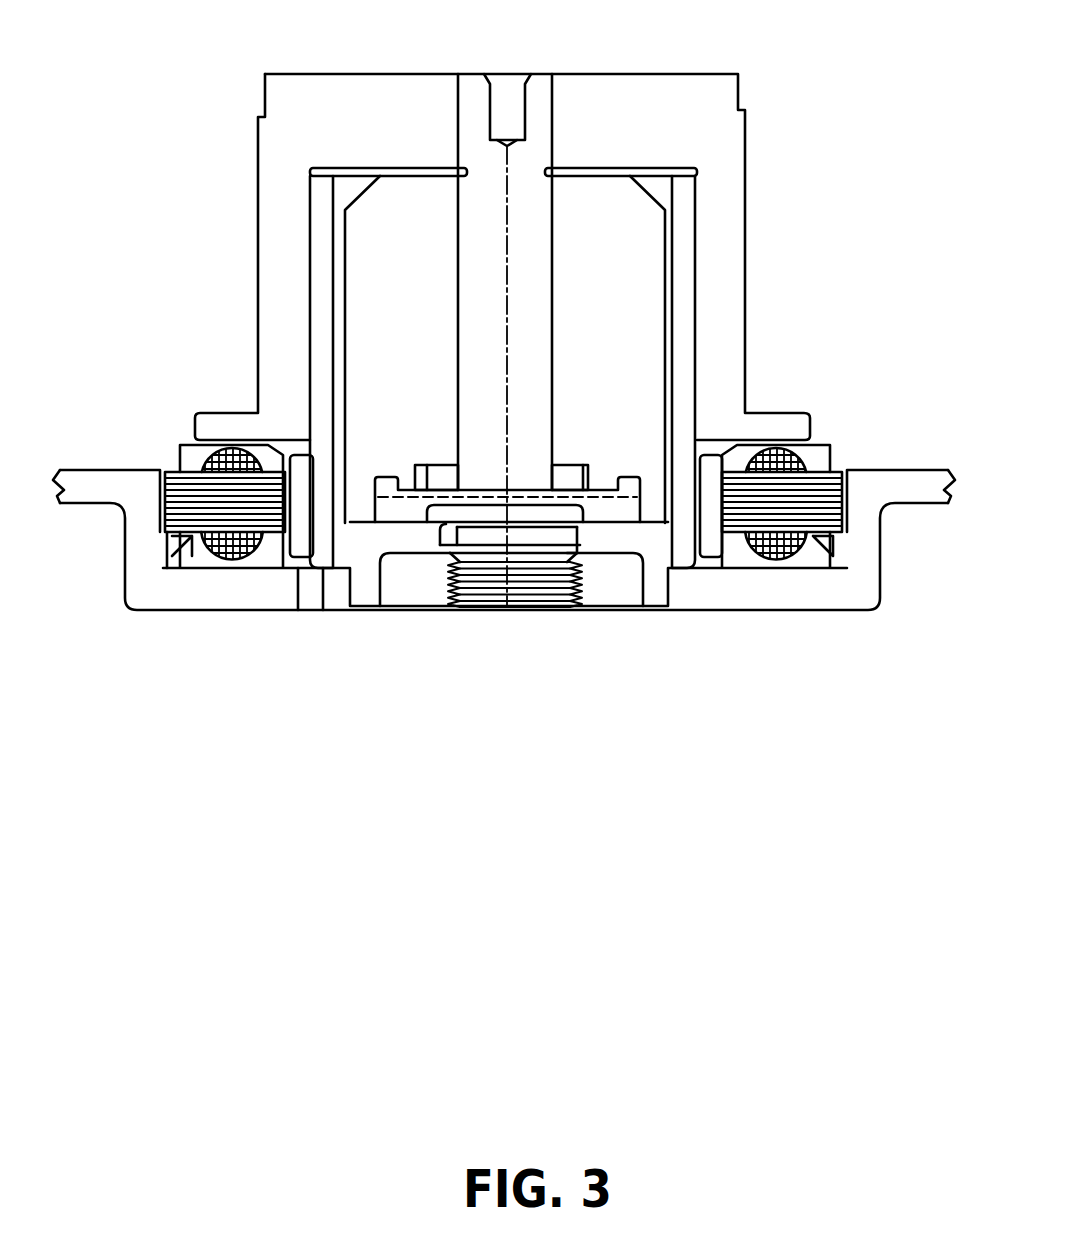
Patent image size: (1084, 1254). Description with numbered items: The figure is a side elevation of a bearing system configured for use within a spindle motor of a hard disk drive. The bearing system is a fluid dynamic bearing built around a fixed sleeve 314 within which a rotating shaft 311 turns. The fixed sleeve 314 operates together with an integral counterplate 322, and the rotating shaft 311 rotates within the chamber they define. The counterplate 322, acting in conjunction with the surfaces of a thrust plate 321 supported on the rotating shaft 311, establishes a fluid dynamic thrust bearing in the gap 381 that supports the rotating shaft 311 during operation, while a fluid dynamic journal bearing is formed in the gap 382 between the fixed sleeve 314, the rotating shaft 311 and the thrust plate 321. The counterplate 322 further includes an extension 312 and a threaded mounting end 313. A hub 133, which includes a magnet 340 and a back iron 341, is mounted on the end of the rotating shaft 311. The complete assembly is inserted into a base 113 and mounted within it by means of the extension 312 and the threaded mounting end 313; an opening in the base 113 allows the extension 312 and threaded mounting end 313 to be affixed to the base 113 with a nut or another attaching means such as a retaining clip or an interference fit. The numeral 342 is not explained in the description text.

The base 113 is at (255, 583).
The hub 133 is at (700, 98).
The rotating shaft 311 is at (480, 110).
The extension 312 is at (567, 535).
The threaded mounting end 313 is at (481, 587).
The fixed sleeve 314 is at (408, 217).
The thrust plate 321 is at (437, 482).
The counterplate 322 is at (625, 508).
The magnet 340 is at (705, 537).
The back iron 341 is at (680, 538).
The coil 342 is at (807, 495).
The gap 381 is at (410, 480).
The gap 382 is at (455, 313).